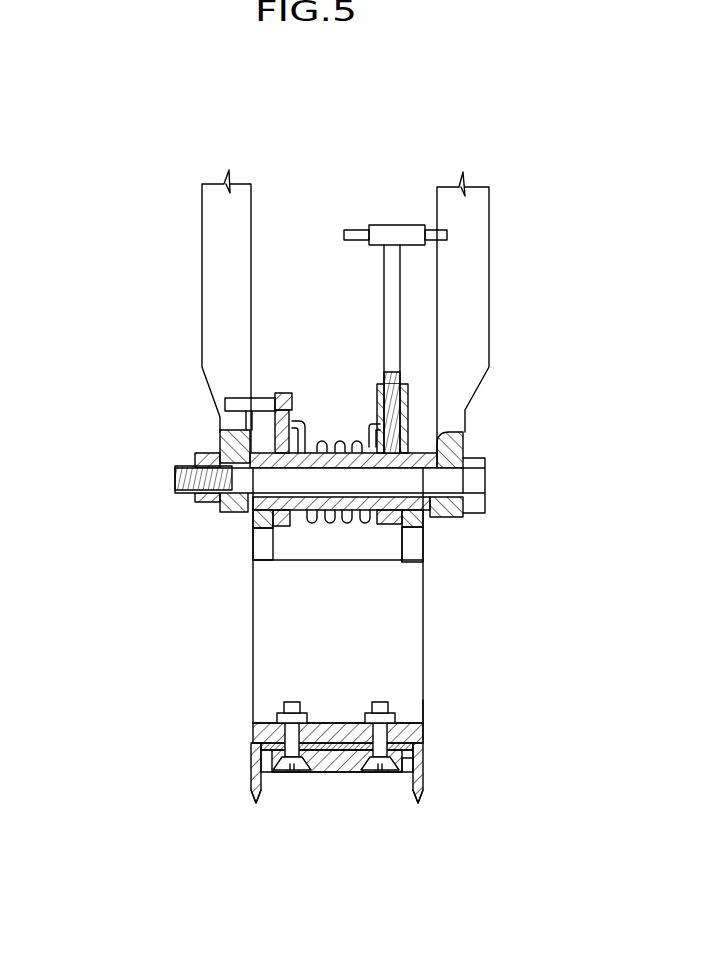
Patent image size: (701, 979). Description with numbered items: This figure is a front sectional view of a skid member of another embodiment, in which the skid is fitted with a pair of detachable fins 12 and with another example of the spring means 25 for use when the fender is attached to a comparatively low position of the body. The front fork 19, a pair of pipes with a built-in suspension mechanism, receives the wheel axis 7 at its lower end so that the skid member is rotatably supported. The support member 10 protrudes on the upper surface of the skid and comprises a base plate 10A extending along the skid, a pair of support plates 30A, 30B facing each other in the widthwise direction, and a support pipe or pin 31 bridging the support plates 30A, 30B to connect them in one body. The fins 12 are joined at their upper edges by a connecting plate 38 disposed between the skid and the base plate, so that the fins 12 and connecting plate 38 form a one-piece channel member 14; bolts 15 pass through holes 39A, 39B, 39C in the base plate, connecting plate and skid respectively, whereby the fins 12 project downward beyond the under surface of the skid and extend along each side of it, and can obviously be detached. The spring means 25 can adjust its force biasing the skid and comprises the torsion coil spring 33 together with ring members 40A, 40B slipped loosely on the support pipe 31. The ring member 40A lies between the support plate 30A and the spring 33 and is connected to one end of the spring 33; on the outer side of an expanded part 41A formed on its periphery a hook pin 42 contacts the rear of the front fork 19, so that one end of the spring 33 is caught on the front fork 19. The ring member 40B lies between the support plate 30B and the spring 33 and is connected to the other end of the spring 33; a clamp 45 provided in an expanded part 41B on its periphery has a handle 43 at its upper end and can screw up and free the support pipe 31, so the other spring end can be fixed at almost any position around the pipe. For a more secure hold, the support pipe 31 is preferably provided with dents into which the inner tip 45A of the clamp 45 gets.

The front fork 19 is at (204, 243).
The clamp 45 is at (378, 275).
The handle 43 is at (377, 225).
The hook pin 42 is at (237, 398).
The expanded part 41A is at (288, 393).
The expanded part 41B is at (373, 410).
The inner tip of the clamp 45A is at (463, 430).
The wheel axis 7 is at (447, 486).
The support pipe or pin 31 is at (370, 466).
The support plate 30A is at (262, 545).
The support plate 30B is at (417, 548).
The ring member 40A is at (278, 517).
The ring member 40B is at (343, 527).
The torsion coil spring 33 is at (380, 533).
The spring means 25 is at (314, 551).
The support member 10 is at (245, 683).
The head edge 10A is at (421, 737).
The bolts 15 is at (421, 717).
The channel member 14 is at (430, 776).
The connecting plate 38 is at (252, 742).
The hole 39A is at (332, 764).
The hole 39B is at (380, 765).
The hole 39C is at (407, 775).
The fins 12 is at (250, 788).